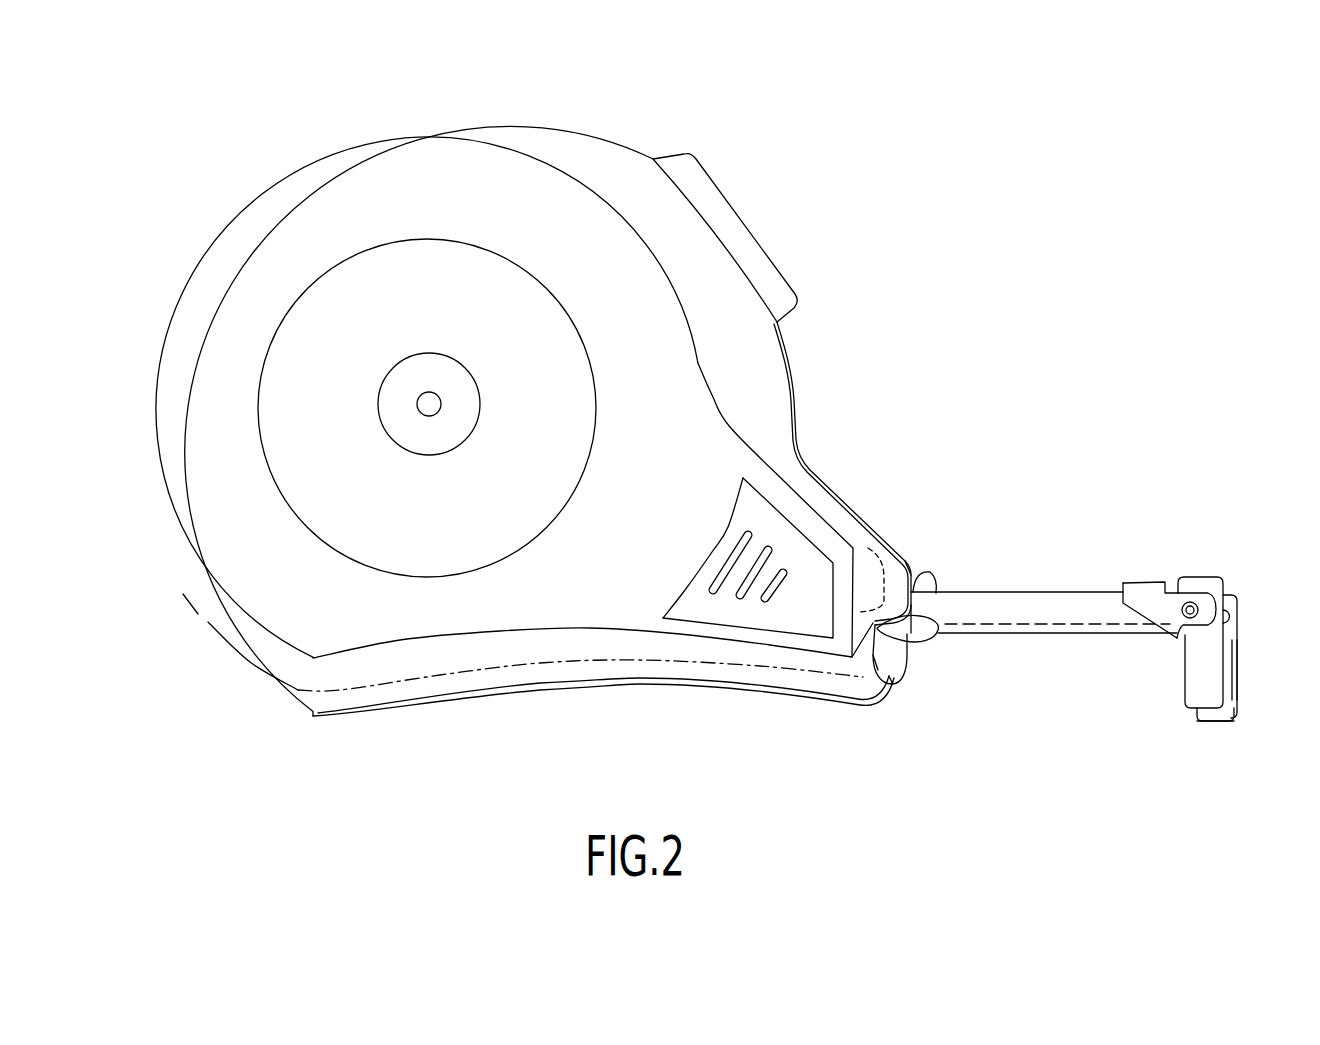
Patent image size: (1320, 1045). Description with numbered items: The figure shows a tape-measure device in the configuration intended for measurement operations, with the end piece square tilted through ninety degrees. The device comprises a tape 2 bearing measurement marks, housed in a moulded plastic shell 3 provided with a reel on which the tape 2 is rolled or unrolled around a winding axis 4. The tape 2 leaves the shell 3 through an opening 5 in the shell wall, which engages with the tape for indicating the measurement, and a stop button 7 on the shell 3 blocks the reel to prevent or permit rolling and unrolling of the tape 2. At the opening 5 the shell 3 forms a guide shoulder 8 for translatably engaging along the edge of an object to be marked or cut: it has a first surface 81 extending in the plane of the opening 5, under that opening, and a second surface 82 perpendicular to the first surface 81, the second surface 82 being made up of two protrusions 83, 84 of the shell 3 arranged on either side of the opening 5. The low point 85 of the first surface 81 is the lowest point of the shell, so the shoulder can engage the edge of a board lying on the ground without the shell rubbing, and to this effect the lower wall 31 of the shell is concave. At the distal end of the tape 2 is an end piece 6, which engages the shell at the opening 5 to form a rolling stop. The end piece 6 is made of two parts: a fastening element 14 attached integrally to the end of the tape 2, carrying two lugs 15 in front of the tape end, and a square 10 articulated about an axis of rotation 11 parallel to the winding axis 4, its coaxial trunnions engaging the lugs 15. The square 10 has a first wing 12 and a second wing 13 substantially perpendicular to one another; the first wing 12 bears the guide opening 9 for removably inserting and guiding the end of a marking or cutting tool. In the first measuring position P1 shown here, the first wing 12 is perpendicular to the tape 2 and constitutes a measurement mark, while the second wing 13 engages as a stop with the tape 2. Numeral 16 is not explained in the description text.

The tape 2 is at (1020, 605).
The shell 3 is at (614, 570).
The lower wall 31 is at (492, 690).
The winding axis 4 is at (426, 406).
The opening 5 is at (925, 648).
The end piece 6 is at (1197, 735).
The stop button 7 is at (748, 258).
The guide shoulder 8 is at (910, 681).
The first surface 81 is at (882, 667).
The second surface 82 is at (930, 640).
The protrusion 83 is at (913, 582).
The protrusion 84 is at (908, 568).
The low point 85 is at (905, 684).
The guide opening 9 is at (1238, 625).
The square 10 is at (1212, 682).
The axis of rotation 11 is at (1193, 604).
The first wing 12 is at (1238, 668).
The second wing 13 is at (1152, 580).
The fastening element 14 is at (1147, 596).
The lug 15 is at (1189, 618).
The link 16 is at (1196, 615).
The first measuring position P1 is at (1165, 498).